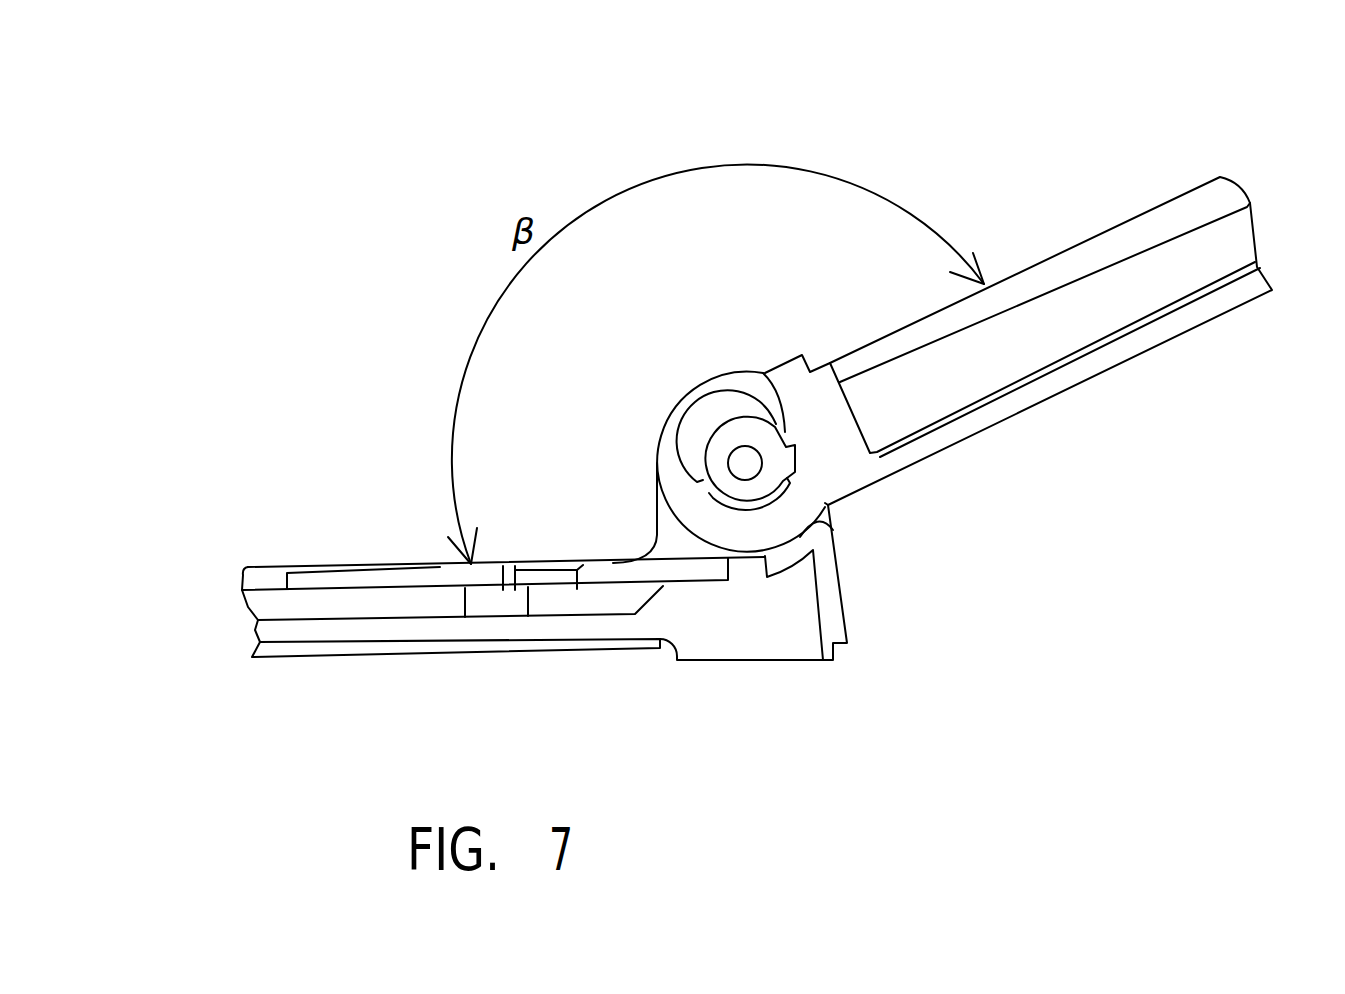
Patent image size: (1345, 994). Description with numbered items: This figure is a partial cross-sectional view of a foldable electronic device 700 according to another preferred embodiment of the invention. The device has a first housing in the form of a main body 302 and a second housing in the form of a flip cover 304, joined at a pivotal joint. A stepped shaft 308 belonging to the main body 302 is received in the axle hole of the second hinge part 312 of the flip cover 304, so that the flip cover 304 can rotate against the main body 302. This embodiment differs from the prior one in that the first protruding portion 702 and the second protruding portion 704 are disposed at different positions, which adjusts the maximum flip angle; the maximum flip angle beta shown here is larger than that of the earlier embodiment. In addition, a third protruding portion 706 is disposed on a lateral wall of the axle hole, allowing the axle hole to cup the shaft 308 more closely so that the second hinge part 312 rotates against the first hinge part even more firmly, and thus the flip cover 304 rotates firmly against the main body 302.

The foldable electronic device 700 is at (1329, 109).
The main body 302 is at (378, 587).
The flip cover 304 is at (1045, 278).
The shaft 308 is at (722, 443).
The second hinge part 312 is at (773, 527).
The first protruding portion 702 is at (797, 458).
The second protruding portion 704 is at (762, 373).
The third protruding portion 706 is at (703, 490).